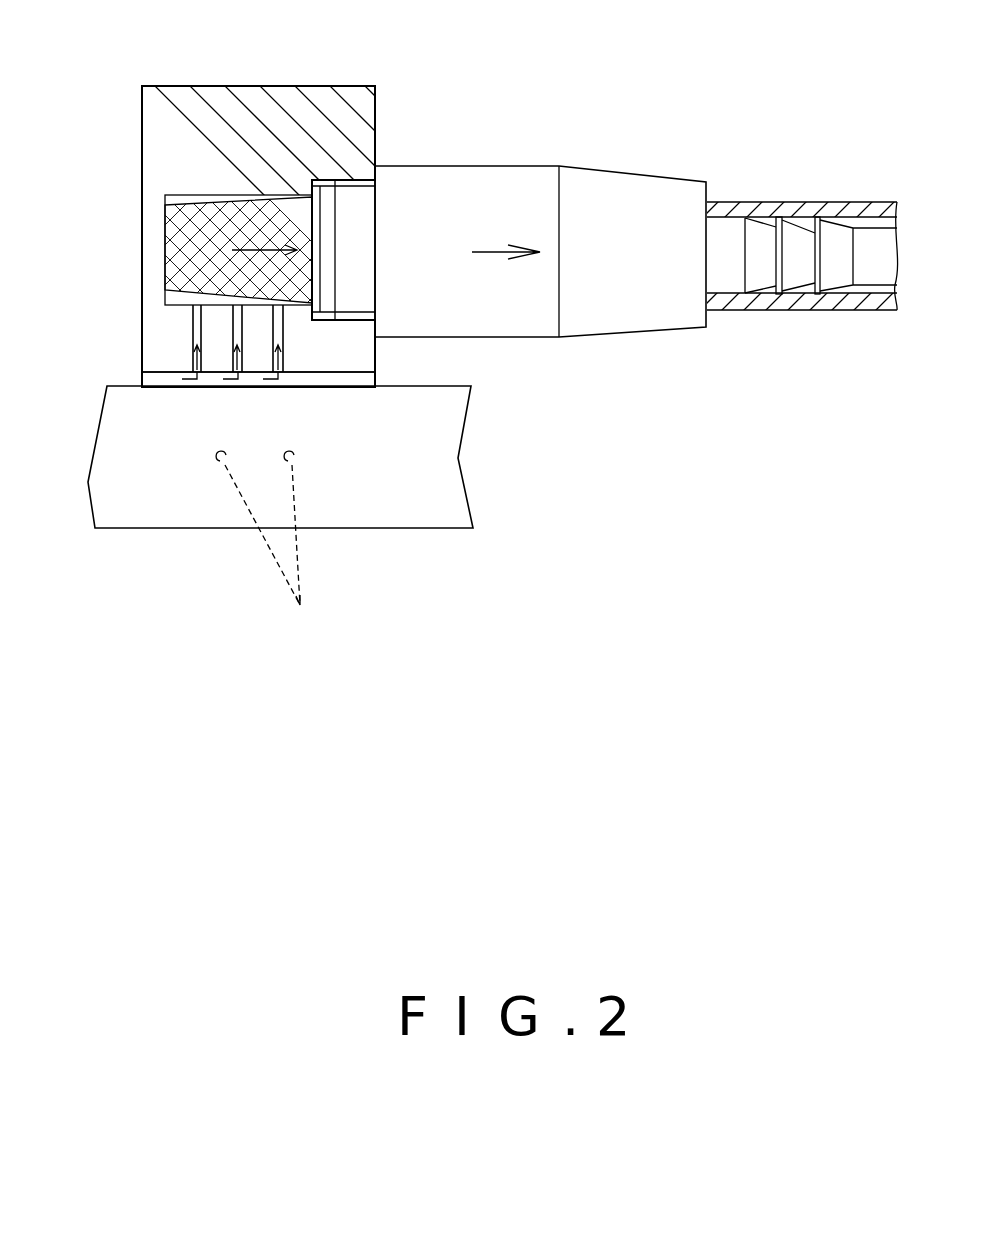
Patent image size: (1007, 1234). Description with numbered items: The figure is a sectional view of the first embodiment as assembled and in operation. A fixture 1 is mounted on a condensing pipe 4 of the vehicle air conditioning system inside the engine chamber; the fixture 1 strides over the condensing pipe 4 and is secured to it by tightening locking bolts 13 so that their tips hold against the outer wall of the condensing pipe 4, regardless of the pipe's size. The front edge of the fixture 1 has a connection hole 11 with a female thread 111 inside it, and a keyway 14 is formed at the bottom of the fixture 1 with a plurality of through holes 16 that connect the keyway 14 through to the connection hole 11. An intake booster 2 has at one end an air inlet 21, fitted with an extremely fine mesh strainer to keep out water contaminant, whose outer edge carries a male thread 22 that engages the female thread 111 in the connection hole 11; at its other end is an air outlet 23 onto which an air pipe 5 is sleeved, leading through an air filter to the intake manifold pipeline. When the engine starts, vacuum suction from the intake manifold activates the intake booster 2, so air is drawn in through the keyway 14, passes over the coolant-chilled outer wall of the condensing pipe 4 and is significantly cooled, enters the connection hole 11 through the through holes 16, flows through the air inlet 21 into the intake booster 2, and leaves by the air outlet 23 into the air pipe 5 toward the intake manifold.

The fixture 1 is at (275, 97).
The intake booster 2 is at (615, 306).
The condensing pipe 4 is at (390, 505).
The air pipe 5 is at (868, 215).
The connection hole 11 is at (185, 198).
The locking bolts 13 is at (266, 540).
The keyway 14 is at (238, 387).
The through holes 16 is at (229, 374).
The air inlet 21 is at (163, 279).
The male thread 22 is at (417, 200).
The female thread 111 is at (373, 175).
The air outlet 23 is at (827, 263).